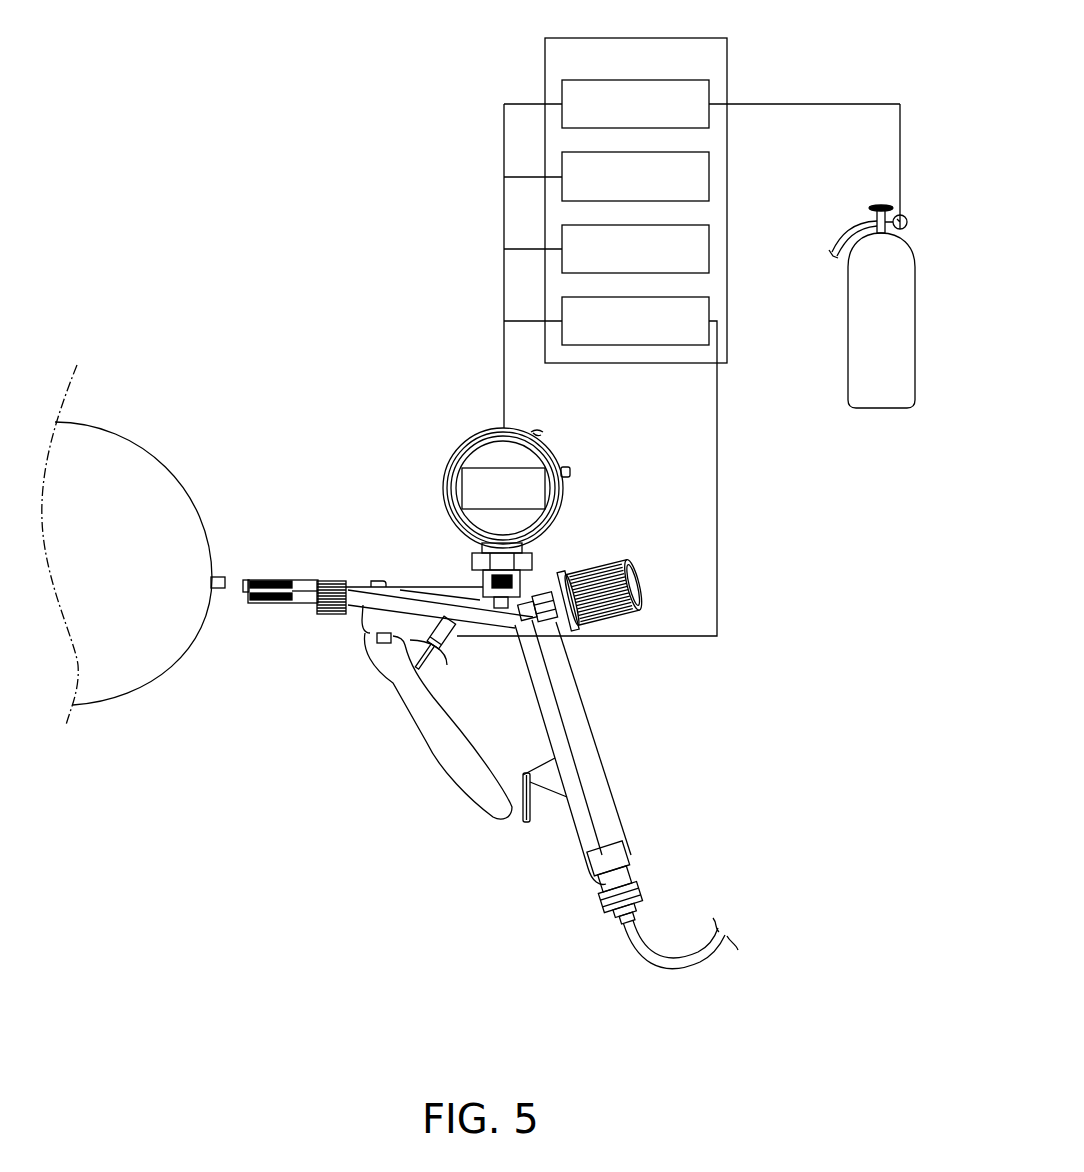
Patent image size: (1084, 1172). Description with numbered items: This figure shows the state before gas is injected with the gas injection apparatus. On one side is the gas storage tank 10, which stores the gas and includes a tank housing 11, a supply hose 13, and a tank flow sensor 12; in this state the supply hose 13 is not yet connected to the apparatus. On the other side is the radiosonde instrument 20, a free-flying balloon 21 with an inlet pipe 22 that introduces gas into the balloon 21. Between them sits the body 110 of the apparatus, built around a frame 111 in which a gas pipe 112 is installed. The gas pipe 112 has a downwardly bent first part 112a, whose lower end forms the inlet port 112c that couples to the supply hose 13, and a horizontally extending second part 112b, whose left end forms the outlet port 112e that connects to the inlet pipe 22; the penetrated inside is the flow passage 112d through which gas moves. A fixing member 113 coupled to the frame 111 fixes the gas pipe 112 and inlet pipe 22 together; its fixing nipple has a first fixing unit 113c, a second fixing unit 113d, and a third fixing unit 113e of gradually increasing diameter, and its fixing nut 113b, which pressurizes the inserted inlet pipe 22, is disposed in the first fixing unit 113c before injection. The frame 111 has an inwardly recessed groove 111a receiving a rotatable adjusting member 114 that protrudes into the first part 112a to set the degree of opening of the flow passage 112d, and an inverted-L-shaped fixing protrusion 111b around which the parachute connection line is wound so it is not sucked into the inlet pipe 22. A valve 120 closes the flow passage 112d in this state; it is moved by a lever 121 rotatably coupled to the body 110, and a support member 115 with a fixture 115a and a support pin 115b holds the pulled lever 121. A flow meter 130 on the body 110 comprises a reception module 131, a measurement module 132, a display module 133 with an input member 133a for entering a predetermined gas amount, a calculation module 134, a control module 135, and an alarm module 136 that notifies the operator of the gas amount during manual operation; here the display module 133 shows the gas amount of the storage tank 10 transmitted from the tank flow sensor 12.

The gas storage tank 10 is at (537, 607).
The tank housing 11 is at (915, 262).
The tank flow sensor 12 is at (907, 222).
The supply hose 13 is at (845, 252).
The radiosonde instrument 20 is at (146, 639).
The balloon 21 is at (126, 467).
The inlet pipe 22 is at (216, 577).
The body 110 is at (407, 693).
The frame 111 is at (607, 767).
The groove 111a is at (533, 593).
The fixing protrusion 111b is at (379, 580).
The gas pipe 112 is at (407, 712).
The first part 112a is at (567, 710).
The second part 112b is at (457, 602).
The inlet port 112c is at (632, 858).
The flow passage 112d is at (424, 602).
The outlet port 112e is at (243, 592).
The fixing member 113 is at (234, 755).
The fixing nut 113b is at (332, 581).
The first fixing unit 113c is at (302, 603).
The second fixing unit 113d is at (268, 580).
The third fixing unit 113e is at (265, 603).
The adjusting member 114 is at (600, 563).
The support member 115 is at (529, 818).
The fixture 115a is at (552, 793).
The support pin 115b is at (523, 820).
The valve 120 is at (415, 668).
The lever 121 is at (432, 763).
The flow meter 130 is at (727, 55).
The reception module 131 is at (709, 88).
The measurement module 132 is at (709, 160).
The display module 133 is at (470, 434).
The input member 133a is at (542, 436).
The calculation module 134 is at (709, 248).
The control module 135 is at (709, 307).
The alarm module 136 is at (572, 472).